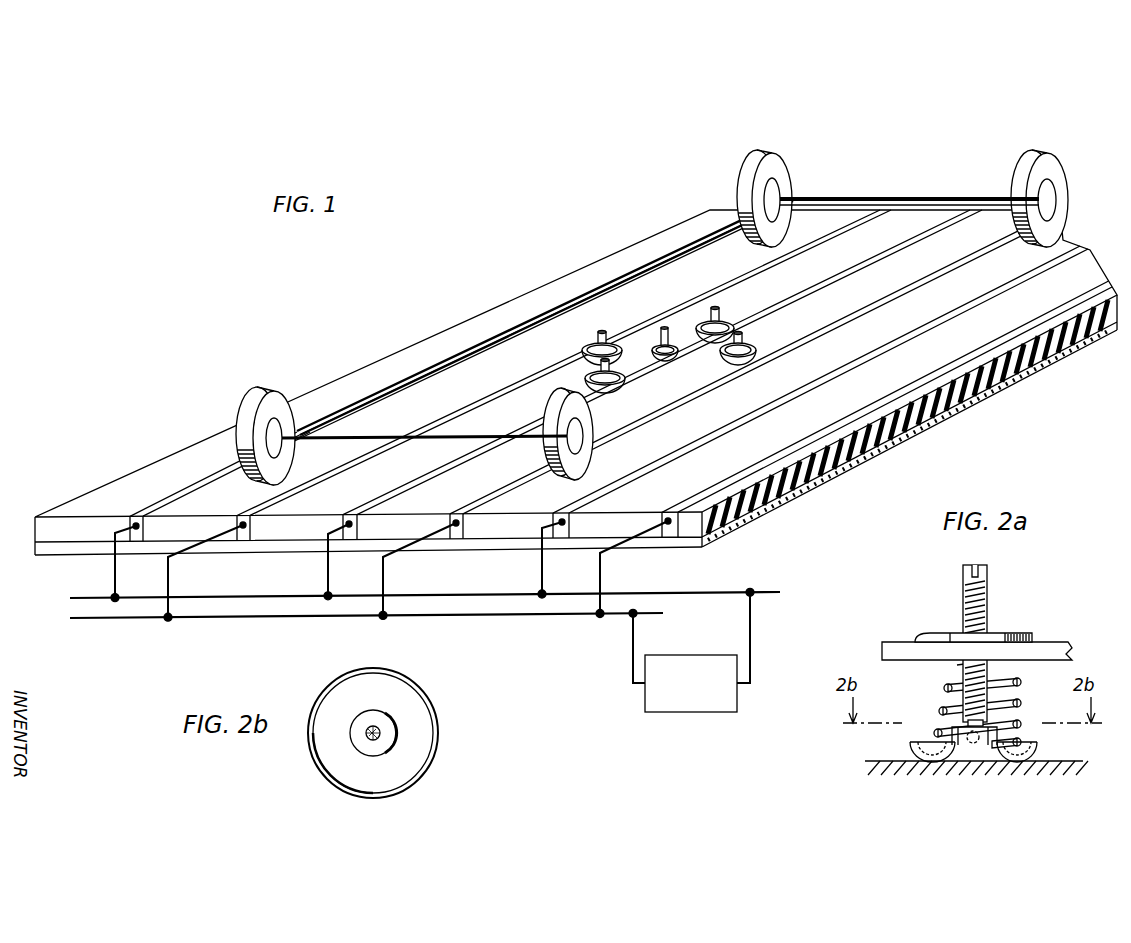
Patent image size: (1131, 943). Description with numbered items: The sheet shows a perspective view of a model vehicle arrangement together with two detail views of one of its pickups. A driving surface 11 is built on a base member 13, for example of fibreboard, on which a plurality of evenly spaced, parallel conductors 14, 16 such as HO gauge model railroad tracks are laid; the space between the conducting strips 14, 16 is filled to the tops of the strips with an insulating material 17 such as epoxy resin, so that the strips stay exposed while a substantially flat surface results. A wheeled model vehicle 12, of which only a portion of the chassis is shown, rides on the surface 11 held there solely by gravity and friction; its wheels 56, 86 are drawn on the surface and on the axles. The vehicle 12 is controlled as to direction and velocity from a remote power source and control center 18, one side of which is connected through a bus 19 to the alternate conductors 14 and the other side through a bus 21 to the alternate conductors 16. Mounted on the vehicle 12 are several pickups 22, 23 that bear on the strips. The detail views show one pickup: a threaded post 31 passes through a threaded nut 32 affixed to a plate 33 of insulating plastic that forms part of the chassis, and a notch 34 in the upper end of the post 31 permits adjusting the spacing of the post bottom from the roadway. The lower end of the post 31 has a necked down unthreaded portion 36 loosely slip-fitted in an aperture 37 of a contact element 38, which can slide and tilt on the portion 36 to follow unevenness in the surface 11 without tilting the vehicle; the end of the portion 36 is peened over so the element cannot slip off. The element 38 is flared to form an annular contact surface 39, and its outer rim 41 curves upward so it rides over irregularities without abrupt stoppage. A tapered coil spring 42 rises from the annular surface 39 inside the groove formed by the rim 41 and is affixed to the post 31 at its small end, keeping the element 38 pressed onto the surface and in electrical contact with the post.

In FIG. 1, the driving surface 11 is at (82, 495).
In FIG. 2A, the driving surface 11 is at (880, 761).
In FIG. 1, the wheeled model vehicle 12 is at (510, 327).
In FIG. 1, the base member 13 is at (75, 550).
In FIG. 1, the conductor 14 is at (147, 526).
In FIG. 1, the conductor 16 is at (254, 525).
In FIG. 1, the insulating material 17 is at (92, 523).
In FIG. 1, the power source and control center 18 is at (670, 712).
In FIG. 1, the bus 19 is at (218, 597).
In FIG. 1, the bus 21 is at (263, 616).
In FIG. 1, the pickup 22 is at (590, 375).
In FIG. 1, the pickup 23 is at (665, 332).
In FIG. 2A, the threaded post 31 is at (988, 592).
In FIG. 2A, the threaded nut 32 is at (1010, 632).
In FIG. 2A, the plate 33 is at (1055, 642).
In FIG. 2A, the notch 34 is at (975, 566).
In FIG. 2A, the necked down unthreaded portion 36 is at (940, 722).
In FIG. 2B, the necked down unthreaded portion 36 is at (380, 734).
In FIG. 2A, the aperture 37 is at (990, 748).
In FIG. 2B, the aperture 37 is at (392, 726).
In FIG. 2A, the contact element 38 is at (915, 752).
In FIG. 2A, the annular contact surface 39 is at (1020, 758).
In FIG. 2B, the annular contact surface 39 is at (388, 693).
In FIG. 2A, the outer rim 41 is at (1030, 750).
In FIG. 2A, the tapered coil spring 42 is at (1021, 682).
In FIG. 1, the wheel 56 is at (277, 389).
In FIG. 1, the wheel 86 is at (772, 156).